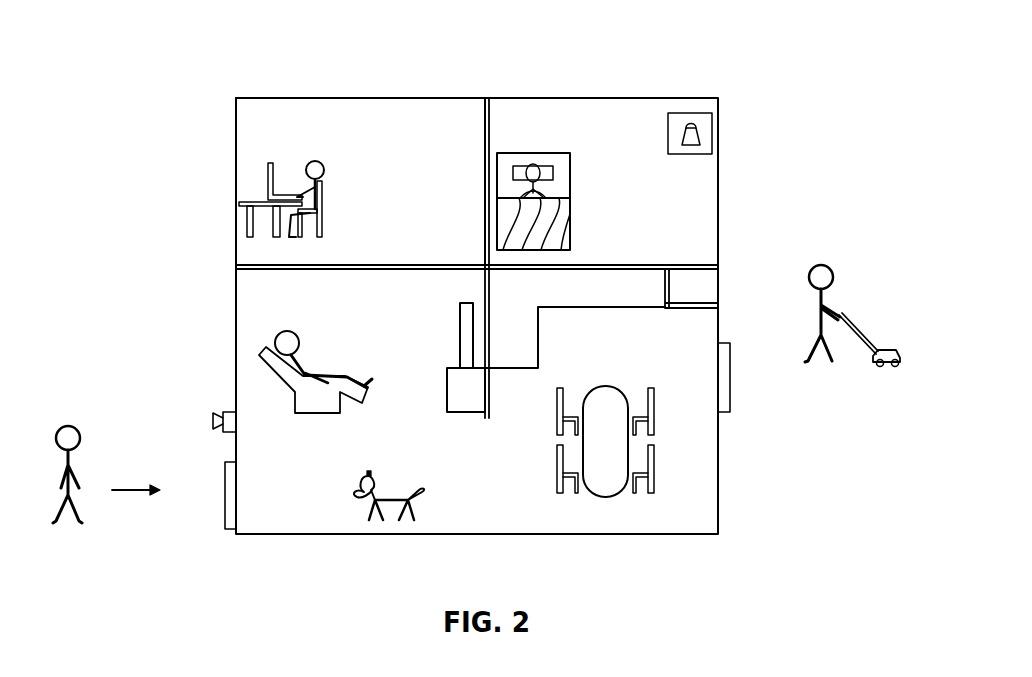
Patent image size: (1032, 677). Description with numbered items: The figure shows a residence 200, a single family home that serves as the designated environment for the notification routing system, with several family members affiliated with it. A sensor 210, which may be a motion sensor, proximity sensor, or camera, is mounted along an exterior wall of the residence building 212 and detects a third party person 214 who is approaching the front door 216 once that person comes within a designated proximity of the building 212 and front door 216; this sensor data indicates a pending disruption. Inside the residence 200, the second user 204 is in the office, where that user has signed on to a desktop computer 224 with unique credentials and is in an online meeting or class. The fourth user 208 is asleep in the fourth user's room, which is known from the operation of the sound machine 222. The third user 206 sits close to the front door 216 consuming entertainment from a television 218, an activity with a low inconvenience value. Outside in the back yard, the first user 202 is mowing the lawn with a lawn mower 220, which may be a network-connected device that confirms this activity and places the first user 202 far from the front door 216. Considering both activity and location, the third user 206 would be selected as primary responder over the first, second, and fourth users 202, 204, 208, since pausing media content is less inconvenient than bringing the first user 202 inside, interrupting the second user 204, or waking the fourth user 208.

The residence 200 is at (256, 84).
The first user 202 is at (826, 267).
The second user 204 is at (327, 168).
The third user 206 is at (281, 332).
The fourth user 208 is at (553, 172).
The sensor 210 is at (226, 411).
The residence building 212 is at (331, 97).
The third party person 214 is at (62, 427).
The front door 216 is at (226, 507).
The television 218 is at (460, 357).
The lawn mower 220 is at (888, 348).
The sound machine 222 is at (667, 133).
The desktop computer 224 is at (268, 182).